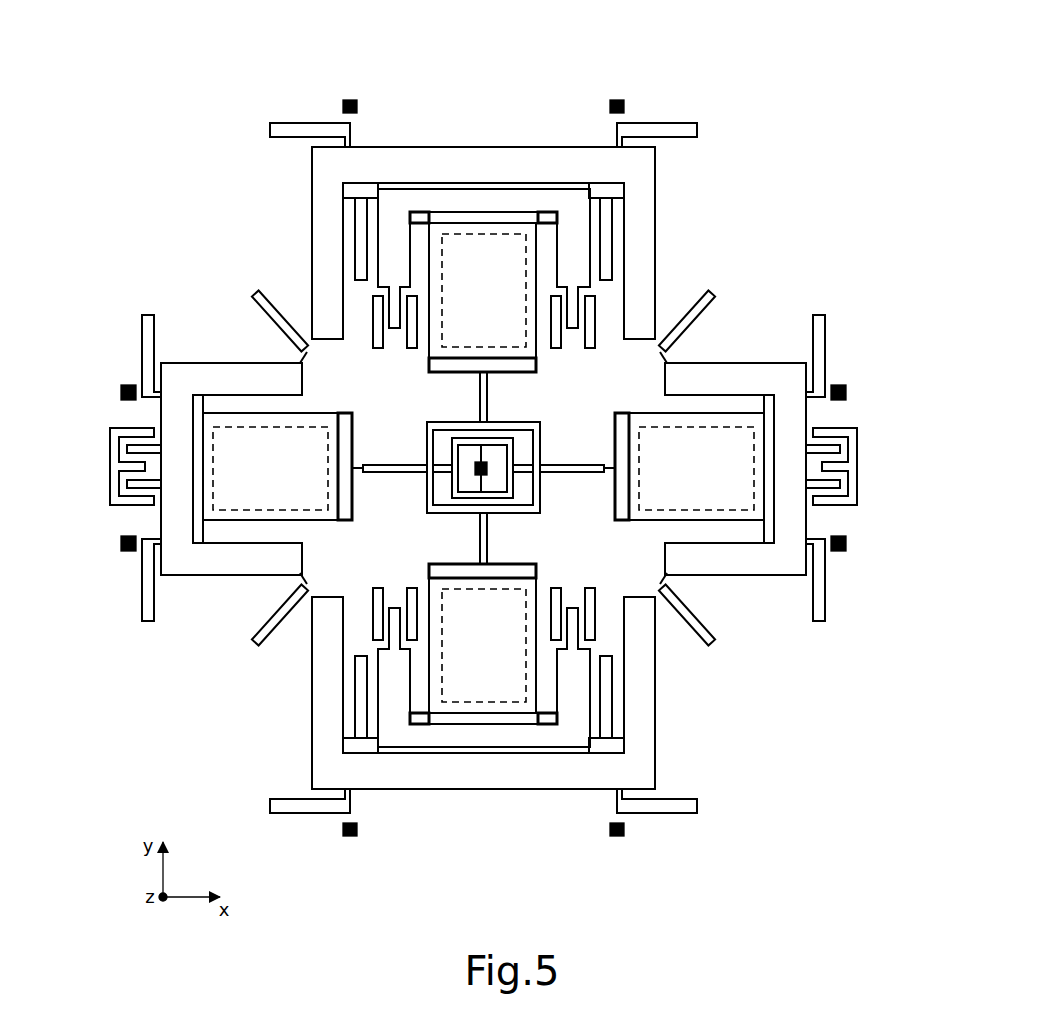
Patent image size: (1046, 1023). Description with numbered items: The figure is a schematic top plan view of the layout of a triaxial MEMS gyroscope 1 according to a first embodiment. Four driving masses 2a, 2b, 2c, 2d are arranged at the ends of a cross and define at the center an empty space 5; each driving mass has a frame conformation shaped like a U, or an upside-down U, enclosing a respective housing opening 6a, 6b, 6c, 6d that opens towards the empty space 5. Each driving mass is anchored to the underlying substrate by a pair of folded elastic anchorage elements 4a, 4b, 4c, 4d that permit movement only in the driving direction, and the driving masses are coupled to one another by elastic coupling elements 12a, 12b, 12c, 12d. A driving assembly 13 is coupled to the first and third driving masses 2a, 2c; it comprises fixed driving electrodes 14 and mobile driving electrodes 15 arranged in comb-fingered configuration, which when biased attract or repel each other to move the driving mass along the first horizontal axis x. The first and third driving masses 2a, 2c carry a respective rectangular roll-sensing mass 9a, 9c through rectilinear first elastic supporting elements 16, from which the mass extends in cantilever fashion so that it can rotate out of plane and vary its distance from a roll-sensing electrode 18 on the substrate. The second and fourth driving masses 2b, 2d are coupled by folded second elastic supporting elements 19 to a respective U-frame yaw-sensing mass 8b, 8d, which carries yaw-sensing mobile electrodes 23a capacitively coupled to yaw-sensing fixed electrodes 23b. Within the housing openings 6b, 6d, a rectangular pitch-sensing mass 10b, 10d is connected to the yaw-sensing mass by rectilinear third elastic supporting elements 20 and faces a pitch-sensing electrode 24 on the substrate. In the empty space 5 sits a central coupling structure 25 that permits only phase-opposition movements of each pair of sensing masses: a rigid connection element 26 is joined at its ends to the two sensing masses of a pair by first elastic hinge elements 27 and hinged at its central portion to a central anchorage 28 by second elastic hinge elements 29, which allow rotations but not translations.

The MEMS gyroscope 1 is at (751, 152).
The first driving mass 2a is at (777, 575).
The second driving mass 2b is at (527, 147).
The third driving mass 2c is at (178, 363).
The fourth driving mass 2d is at (497, 790).
The elastic anchorage element 4a is at (820, 345).
The elastic anchorage element 4b is at (305, 122).
The elastic anchorage element 4c is at (142, 350).
The elastic anchorage element 4d is at (304, 813).
The empty space 5 is at (555, 417).
The housing opening 6a is at (703, 530).
The housing opening 6b is at (620, 290).
The housing opening 6c is at (248, 534).
The housing opening 6d is at (616, 628).
The yaw-sensing mass 8b is at (483, 189).
The yaw-sensing mass 8d is at (445, 747).
The roll-sensing mass 9a is at (640, 521).
The roll-sensing mass 9c is at (313, 521).
The pitch-sensing mass 10b is at (432, 330).
The pitch-sensing mass 10d is at (538, 595).
The elastic coupling element 12a is at (703, 300).
The elastic coupling element 12b is at (272, 292).
The elastic coupling element 12c is at (292, 645).
The elastic coupling element 12d is at (703, 642).
The assembly of driving electrodes 13 is at (108, 420).
The fixed driving electrodes 14 is at (843, 468).
The mobile driving electrodes 15 is at (830, 440).
The first elastic supporting elements 16 is at (206, 400).
The roll-sensing electrode 18 is at (300, 435).
The second elastic supporting elements 19 is at (372, 190).
The third elastic supporting elements 20 is at (550, 212).
The yaw-sensing mobile electrodes 23a is at (394, 330).
The yaw-sensing fixed electrodes 23b is at (376, 342).
The pitch-sensing electrode 24 is at (503, 330).
The central coupling structure 25 is at (552, 489).
The rigid connection element 26 is at (544, 445).
The first elastic hinge elements 27 is at (476, 376).
The central anchorage 28 is at (478, 468).
The second elastic hinge elements 29 is at (481, 482).